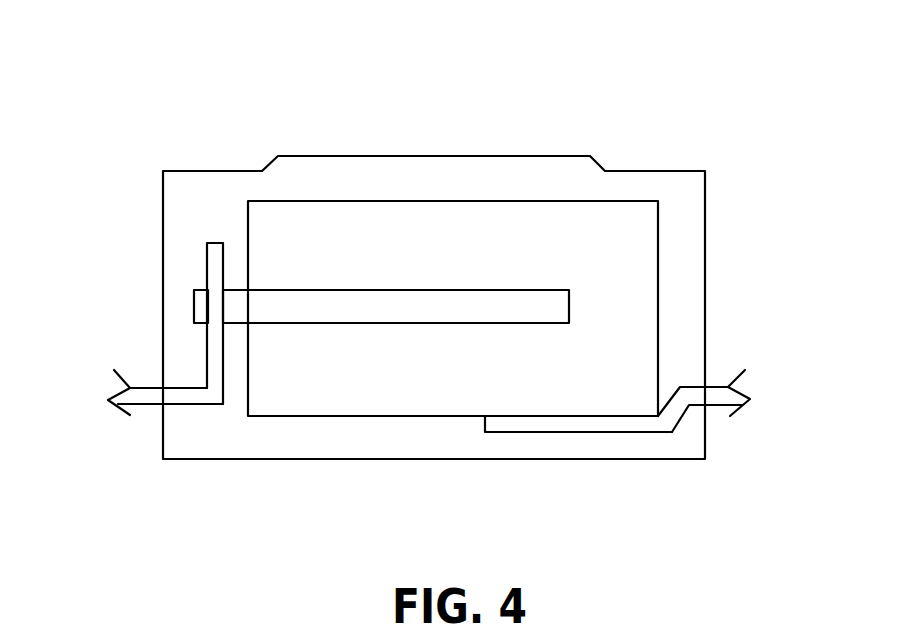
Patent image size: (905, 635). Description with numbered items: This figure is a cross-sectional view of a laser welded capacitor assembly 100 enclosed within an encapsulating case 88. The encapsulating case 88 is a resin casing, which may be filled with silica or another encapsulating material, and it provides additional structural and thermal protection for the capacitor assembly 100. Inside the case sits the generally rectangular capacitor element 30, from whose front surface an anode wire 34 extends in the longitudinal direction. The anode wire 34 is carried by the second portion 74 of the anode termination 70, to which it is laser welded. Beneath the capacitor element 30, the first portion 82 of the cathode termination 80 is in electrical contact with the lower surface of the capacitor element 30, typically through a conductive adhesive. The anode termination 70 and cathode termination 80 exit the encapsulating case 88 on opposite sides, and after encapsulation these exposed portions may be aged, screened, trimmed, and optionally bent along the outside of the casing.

The capacitor assembly 100 is at (339, 112).
The encapsulating case 88 is at (692, 192).
The capacitor element 30 is at (599, 225).
The anode wire 34 is at (445, 307).
The second portion of anode termination 74 is at (207, 342).
The anode termination 70 is at (128, 388).
The cathode termination 80 is at (715, 385).
The first portion of cathode termination 82 is at (612, 423).